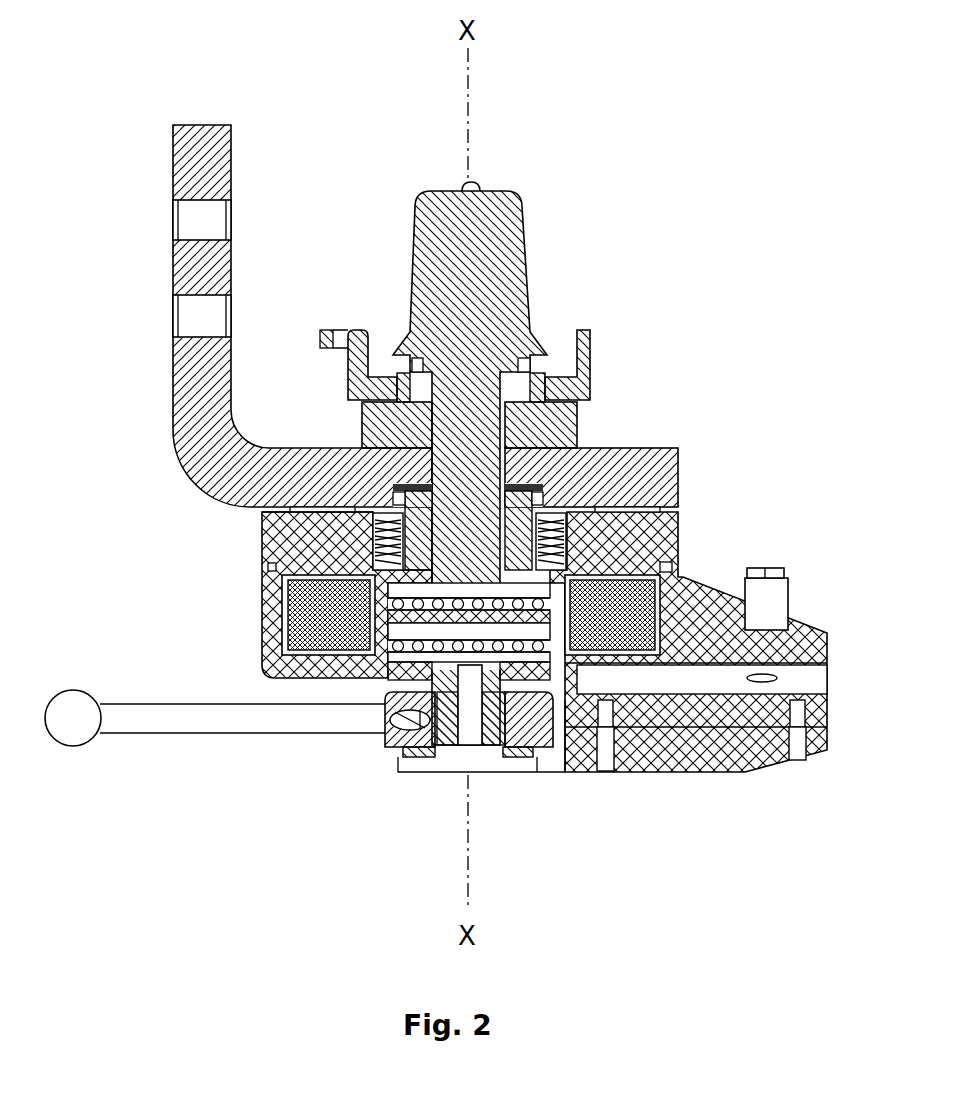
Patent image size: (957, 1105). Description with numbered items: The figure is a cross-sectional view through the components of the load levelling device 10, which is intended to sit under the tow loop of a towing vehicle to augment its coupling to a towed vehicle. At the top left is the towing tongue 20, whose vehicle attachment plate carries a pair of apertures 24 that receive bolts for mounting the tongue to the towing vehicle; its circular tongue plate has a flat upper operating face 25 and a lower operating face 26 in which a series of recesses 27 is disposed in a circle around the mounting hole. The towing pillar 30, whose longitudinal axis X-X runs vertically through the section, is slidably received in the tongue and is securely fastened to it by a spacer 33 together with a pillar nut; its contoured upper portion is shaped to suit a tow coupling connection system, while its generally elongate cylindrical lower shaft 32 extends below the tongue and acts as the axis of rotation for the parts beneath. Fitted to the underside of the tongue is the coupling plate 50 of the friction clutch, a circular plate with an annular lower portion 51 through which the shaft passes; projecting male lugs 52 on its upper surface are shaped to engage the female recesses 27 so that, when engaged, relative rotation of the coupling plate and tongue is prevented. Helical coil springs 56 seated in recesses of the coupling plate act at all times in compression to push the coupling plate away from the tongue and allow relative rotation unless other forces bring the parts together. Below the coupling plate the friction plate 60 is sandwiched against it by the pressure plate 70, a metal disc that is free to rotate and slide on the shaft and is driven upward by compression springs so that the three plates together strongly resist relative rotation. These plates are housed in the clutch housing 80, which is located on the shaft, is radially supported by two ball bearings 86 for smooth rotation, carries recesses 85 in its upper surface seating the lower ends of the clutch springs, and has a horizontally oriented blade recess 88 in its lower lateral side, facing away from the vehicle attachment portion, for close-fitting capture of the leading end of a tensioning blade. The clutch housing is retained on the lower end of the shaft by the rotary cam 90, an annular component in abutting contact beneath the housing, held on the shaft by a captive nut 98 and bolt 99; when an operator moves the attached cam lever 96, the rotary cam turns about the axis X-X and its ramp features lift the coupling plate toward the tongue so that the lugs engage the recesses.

The load levelling device 10 is at (275, 825).
The towing tongue 20 is at (205, 125).
The apertures 24 is at (195, 297).
The flat upper operating face 25 is at (670, 450).
The lower operating face 26 is at (270, 510).
The recesses 27 is at (318, 508).
The towing pillar 30 is at (498, 200).
The lower shaft 32 is at (443, 728).
The spacer 33 is at (578, 425).
The coupling plate 50 is at (258, 558).
The annular lower portion 51 is at (545, 613).
The lugs 52 is at (660, 516).
The helical coil springs 56 is at (570, 512).
The friction plate 60 is at (318, 602).
The pressure plate 70 is at (650, 578).
The clutch housing 80 is at (317, 665).
The recesses 85 is at (680, 650).
The ball bearings 86 is at (580, 660).
The blade recess 88 is at (800, 695).
The rotary cam 90 is at (385, 716).
The cam lever 96 is at (75, 746).
The captive nut 98 is at (400, 758).
The bolt 99 is at (475, 770).